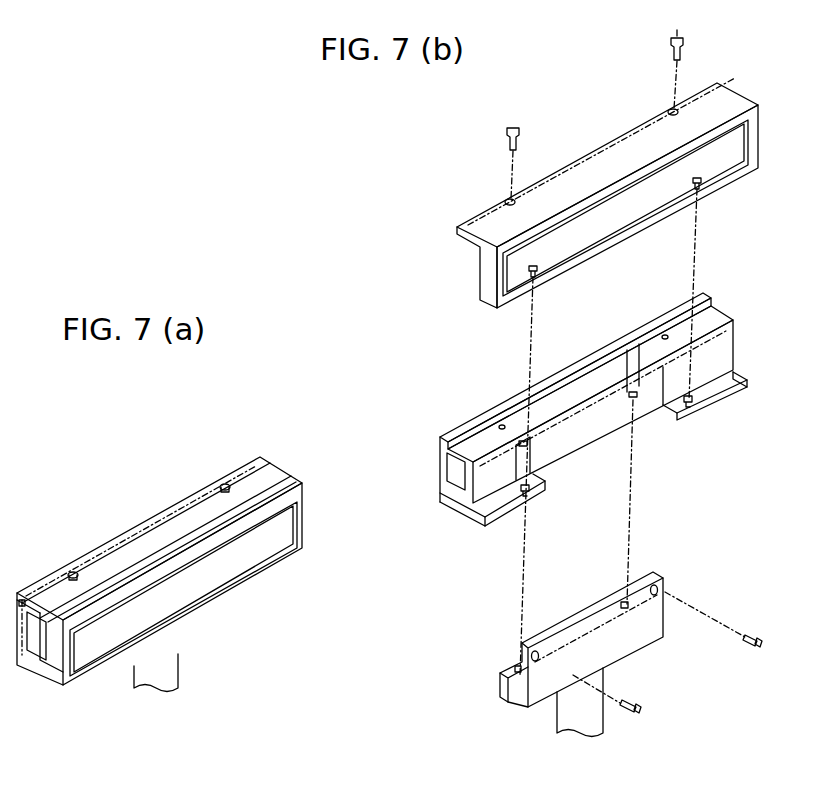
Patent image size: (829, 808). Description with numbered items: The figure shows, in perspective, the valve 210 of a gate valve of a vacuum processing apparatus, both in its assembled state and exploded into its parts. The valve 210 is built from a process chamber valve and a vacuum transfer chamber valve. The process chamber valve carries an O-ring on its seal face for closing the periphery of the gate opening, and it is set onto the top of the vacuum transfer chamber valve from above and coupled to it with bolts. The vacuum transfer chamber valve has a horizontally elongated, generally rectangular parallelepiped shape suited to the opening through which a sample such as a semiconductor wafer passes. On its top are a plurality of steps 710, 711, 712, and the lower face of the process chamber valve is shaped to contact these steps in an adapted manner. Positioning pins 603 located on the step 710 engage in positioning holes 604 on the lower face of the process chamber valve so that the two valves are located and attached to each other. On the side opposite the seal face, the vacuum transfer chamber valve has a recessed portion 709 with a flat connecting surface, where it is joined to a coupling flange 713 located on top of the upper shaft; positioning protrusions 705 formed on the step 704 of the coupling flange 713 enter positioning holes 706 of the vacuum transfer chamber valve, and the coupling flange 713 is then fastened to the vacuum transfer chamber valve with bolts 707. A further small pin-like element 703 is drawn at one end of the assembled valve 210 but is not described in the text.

The valve 210 is at (152, 478).
The positioning pin 603 is at (691, 408).
The positioning hole 604 is at (700, 190).
The positioning pin 703 is at (21, 598).
The step 704 is at (500, 685).
The positioning protrusion 705 is at (617, 600).
The positioning hole 706 is at (633, 388).
The bolt 707 is at (753, 632).
The recessed portion 709 is at (592, 438).
The step 710 is at (476, 520).
The step 711 is at (440, 472).
The step 712 is at (474, 424).
The coupling flange 713 is at (643, 642).